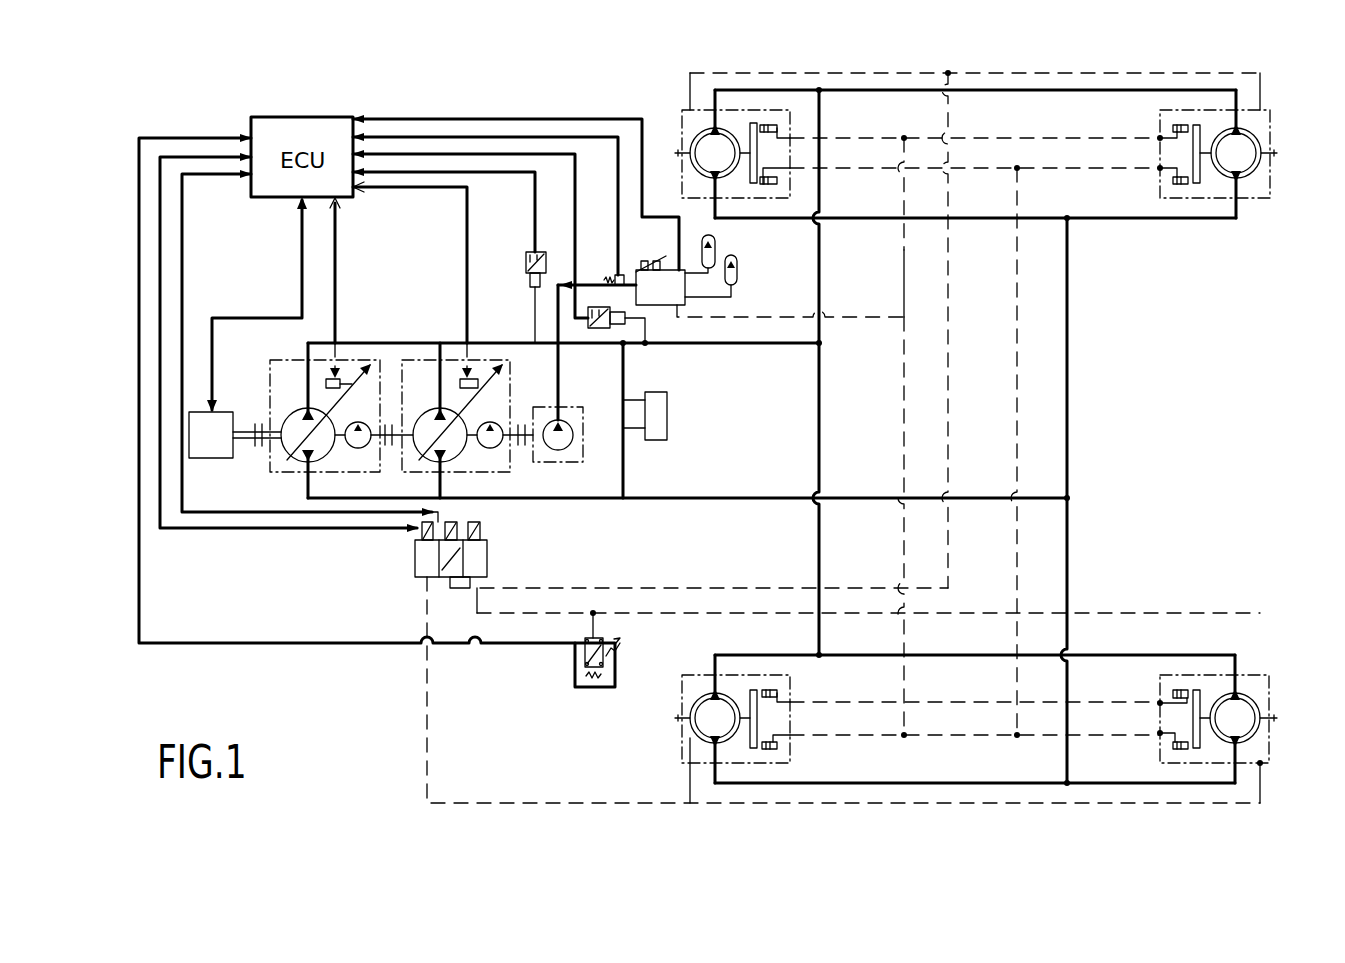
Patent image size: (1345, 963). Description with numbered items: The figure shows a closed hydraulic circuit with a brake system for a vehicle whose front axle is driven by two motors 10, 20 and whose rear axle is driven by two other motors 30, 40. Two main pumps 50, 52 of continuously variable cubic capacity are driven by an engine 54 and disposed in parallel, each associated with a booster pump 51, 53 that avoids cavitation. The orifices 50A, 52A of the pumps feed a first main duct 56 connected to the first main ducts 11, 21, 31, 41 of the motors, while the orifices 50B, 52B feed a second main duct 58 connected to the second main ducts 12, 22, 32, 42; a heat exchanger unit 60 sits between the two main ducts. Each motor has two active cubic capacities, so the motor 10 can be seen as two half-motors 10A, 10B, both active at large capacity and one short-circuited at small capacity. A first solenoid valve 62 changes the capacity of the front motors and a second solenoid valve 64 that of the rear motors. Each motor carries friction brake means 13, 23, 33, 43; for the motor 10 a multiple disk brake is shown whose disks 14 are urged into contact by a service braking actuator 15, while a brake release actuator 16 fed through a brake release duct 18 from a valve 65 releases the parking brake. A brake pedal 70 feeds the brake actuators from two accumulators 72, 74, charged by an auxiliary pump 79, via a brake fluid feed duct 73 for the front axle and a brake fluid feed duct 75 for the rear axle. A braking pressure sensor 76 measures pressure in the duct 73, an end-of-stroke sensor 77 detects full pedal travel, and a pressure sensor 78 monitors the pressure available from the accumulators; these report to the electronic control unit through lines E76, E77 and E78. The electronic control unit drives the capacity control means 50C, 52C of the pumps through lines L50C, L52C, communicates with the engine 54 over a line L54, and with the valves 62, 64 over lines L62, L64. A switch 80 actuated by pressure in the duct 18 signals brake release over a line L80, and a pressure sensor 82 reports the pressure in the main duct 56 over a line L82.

The motor 10 is at (738, 749).
The half-motor 10A is at (700, 703).
The half-motor 10B is at (695, 728).
The first main duct of motor 11 is at (714, 665).
The second main duct of motor 12 is at (715, 786).
The friction brake means 13 is at (792, 753).
The disks 14 is at (757, 752).
The actuator 15 is at (782, 745).
The actuator 16 is at (782, 694).
The brake release duct 18 is at (490, 622).
The motor 20 is at (1233, 750).
The first main duct of motor 21 is at (1237, 676).
The second main duct of motor 22 is at (1240, 742).
The friction brake means 23 is at (1195, 758).
The motor 30 is at (738, 114).
The first main duct of motor 31 is at (716, 108).
The second main duct of motor 32 is at (712, 193).
The friction brake means 33 is at (776, 112).
The motor 40 is at (1223, 179).
The first main duct of motor 41 is at (1237, 118).
The second main duct of motor 42 is at (1237, 192).
The friction brake means 43 is at (1170, 195).
The main pump 50 is at (303, 419).
The orifice 50A is at (297, 415).
The orifice 50B is at (314, 460).
The means for causing the cubic capacity of the pump to vary 50C is at (328, 378).
The booster pump 51 is at (360, 424).
The main pump 52 is at (450, 406).
The orifice 52A is at (438, 408).
The orifice 52B is at (450, 460).
The means for causing the cubic capacity of the pump to vary 52C is at (470, 378).
The booster pump 53 is at (497, 420).
The engine 54 is at (200, 442).
The first main duct 56 is at (770, 343).
The second main duct 58 is at (712, 497).
The heat exchanger unit 60 is at (660, 412).
The first solenoid valve 62 is at (457, 555).
The second solenoid valve 64 is at (460, 560).
The valve 65 is at (478, 562).
The brake pedal 70 is at (660, 262).
The accumulator 72 is at (715, 242).
The brake fluid feed duct 73 is at (904, 440).
The accumulator 74 is at (738, 283).
The brake fluid feed duct 75 is at (904, 290).
The braking pressure sensor 76 is at (601, 330).
The end-of-stroke sensor 77 is at (621, 287).
The pressure sensor 78 is at (610, 278).
The auxiliary pump 79 is at (567, 442).
The switch 80 is at (603, 640).
The pressure sensor 82 is at (526, 255).
The inlet line E76 is at (448, 153).
The inlet line E77 is at (606, 118).
The line E78 is at (618, 158).
The line L50C is at (336, 290).
The line L52C is at (467, 256).
The line L54 is at (302, 243).
The line L62 is at (163, 307).
The line L64 is at (210, 177).
The line L80 is at (196, 646).
The line L82 is at (535, 228).